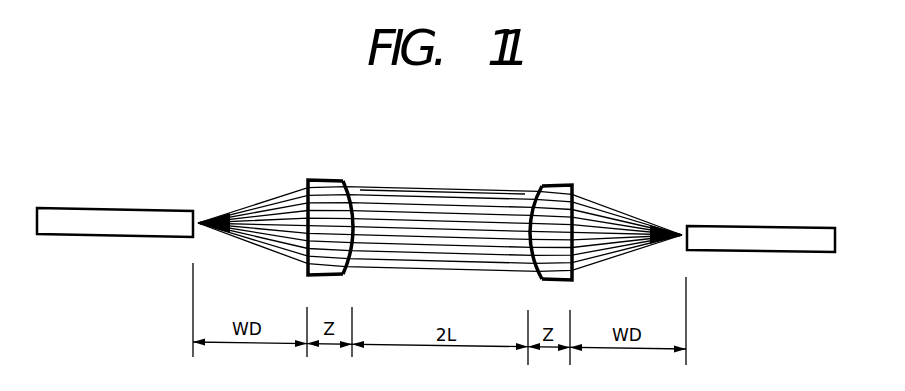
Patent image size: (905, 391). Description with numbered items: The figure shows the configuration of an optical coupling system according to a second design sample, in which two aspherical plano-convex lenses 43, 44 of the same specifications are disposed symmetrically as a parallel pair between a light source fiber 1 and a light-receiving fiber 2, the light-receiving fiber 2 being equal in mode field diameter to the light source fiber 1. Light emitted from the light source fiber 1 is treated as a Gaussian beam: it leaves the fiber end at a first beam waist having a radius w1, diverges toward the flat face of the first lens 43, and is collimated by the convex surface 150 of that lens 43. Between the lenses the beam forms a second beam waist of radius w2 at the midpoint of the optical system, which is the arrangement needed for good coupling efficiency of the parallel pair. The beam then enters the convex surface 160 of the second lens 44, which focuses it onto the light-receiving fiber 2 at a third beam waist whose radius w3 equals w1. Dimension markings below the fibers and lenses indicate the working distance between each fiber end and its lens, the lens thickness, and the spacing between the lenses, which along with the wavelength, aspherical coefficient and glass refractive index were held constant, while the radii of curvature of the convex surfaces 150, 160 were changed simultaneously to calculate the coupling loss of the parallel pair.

The light source fiber 1 is at (120, 220).
The light-receiving fiber 2 is at (763, 235).
The aspherical plano-convex lens 43 is at (350, 191).
The aspherical plano-convex lens 44 is at (534, 193).
The convex surface 150 is at (347, 183).
The convex surface 160 is at (538, 190).
The radius of first beam waist w1 is at (200, 200).
The radius of second beam waist w2 is at (443, 182).
The radius of third beam waist w3 is at (681, 217).